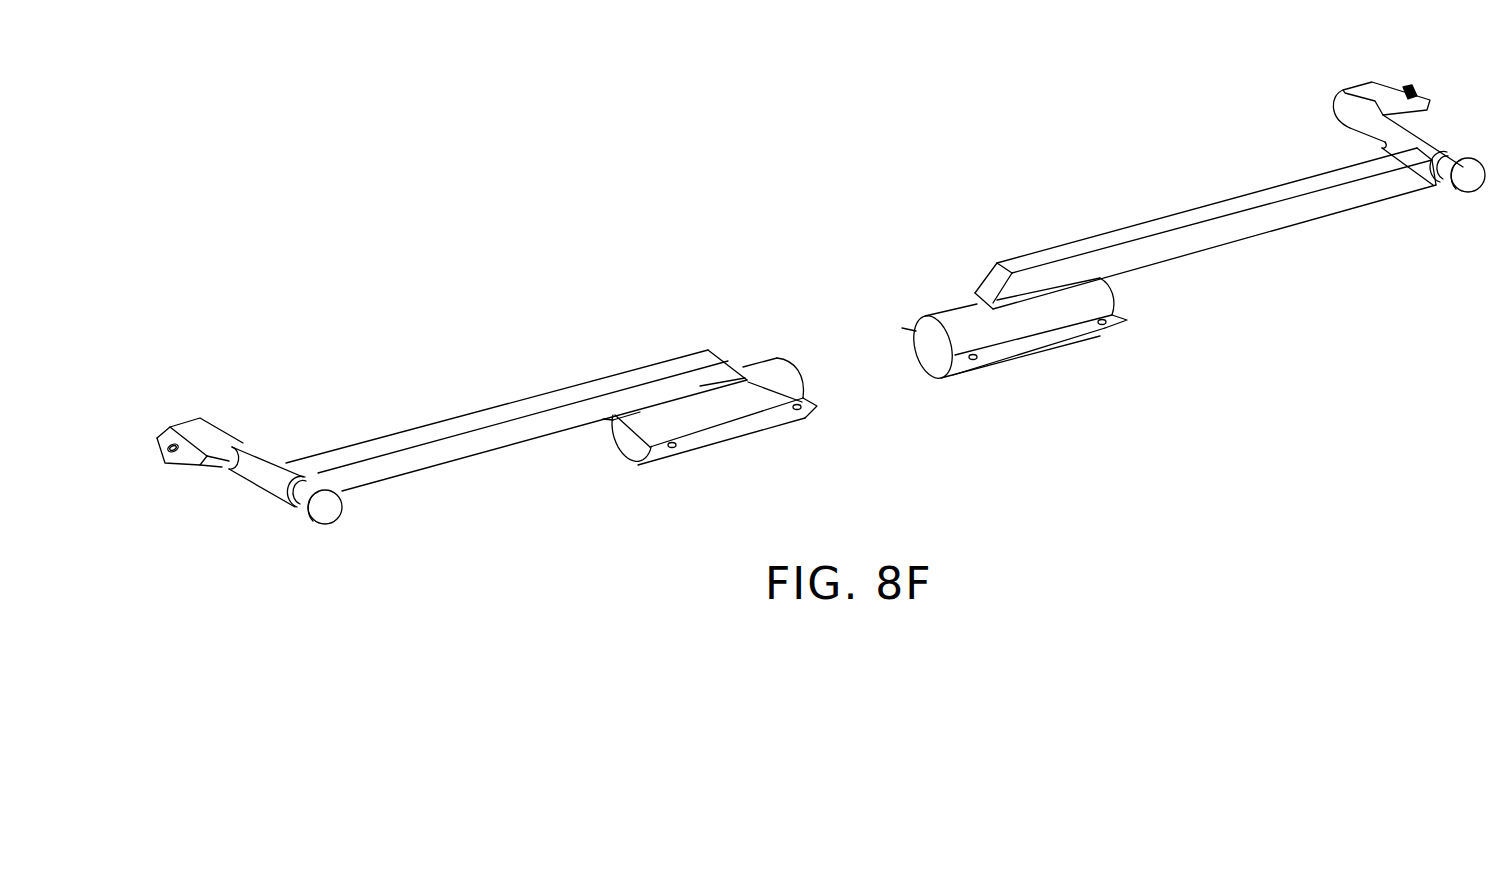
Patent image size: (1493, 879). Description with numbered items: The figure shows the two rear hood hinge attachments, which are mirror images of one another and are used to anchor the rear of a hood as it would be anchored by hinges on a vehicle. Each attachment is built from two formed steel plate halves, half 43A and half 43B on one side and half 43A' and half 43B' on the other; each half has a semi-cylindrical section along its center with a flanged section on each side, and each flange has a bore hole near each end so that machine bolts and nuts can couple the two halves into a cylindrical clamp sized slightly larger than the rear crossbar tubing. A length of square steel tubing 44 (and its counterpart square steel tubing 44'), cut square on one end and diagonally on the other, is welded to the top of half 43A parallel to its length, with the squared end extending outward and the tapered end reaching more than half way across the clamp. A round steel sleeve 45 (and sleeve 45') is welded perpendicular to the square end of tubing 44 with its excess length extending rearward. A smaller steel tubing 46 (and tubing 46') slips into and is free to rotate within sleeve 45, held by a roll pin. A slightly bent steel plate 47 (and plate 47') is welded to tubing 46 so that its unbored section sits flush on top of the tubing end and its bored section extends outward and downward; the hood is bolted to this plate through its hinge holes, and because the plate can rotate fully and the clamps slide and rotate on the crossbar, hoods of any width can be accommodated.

The half 43A is at (751, 355).
The half 43B is at (710, 471).
The square steel tubing 44 is at (516, 419).
The round steel tubing or sleeve 45 is at (285, 477).
The steel tubing 46 is at (216, 514).
The steel plate 47 is at (200, 416).
The half 43A' is at (1007, 298).
The half 43B' is at (1034, 382).
The square steel tubing 44' is at (1205, 228).
The round steel tubing or sleeve 45' is at (1433, 127).
The steel tubing 46' is at (1318, 124).
The steel plate 47' is at (1393, 69).